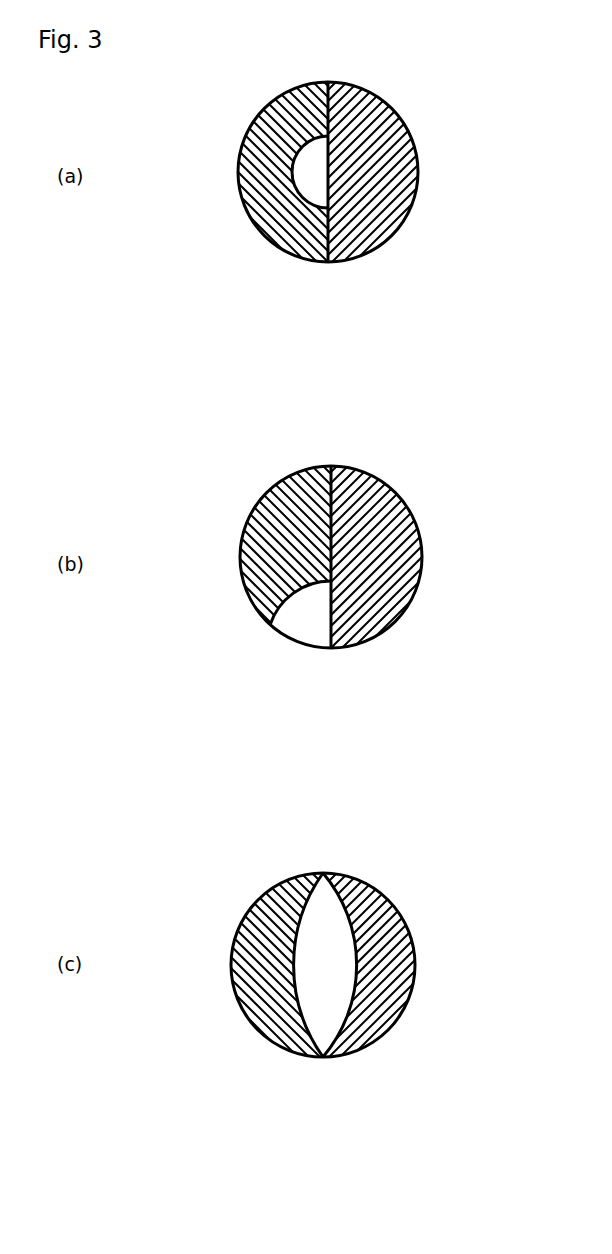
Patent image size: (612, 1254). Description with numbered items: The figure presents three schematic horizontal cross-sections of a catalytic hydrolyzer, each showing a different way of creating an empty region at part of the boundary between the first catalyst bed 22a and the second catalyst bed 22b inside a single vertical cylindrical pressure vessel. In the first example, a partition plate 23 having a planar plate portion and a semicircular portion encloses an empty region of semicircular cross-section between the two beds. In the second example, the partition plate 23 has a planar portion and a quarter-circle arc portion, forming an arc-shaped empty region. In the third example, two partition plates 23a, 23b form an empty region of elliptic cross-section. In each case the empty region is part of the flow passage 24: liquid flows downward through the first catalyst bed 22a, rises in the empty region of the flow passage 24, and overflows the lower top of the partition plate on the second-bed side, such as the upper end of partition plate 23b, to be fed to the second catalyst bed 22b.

The first catalyst bed 22a is at (258, 172).
The second catalyst bed 22b is at (403, 160).
The partition plate 23 is at (336, 240).
The flow passage 24 is at (310, 173).
The partition plate 23a is at (307, 1027).
The partition plate 23b is at (343, 913).